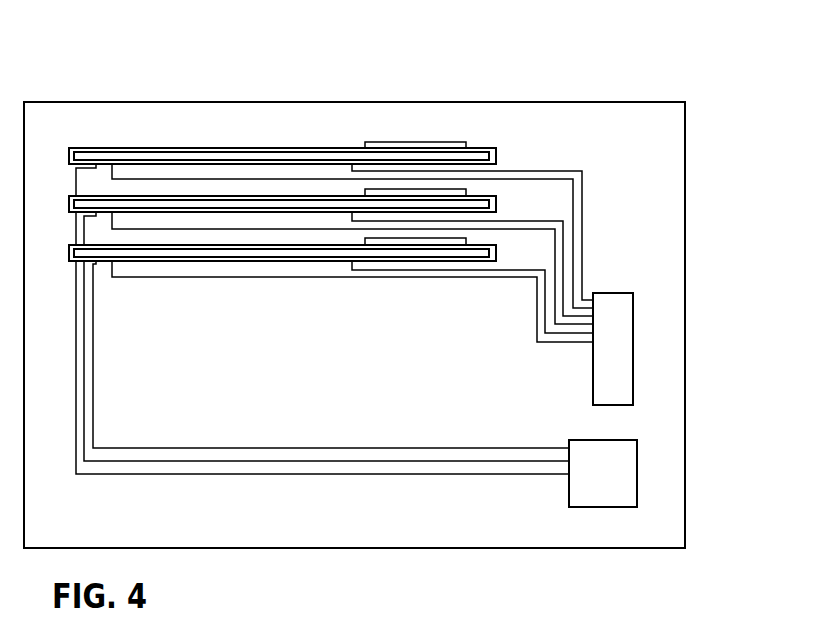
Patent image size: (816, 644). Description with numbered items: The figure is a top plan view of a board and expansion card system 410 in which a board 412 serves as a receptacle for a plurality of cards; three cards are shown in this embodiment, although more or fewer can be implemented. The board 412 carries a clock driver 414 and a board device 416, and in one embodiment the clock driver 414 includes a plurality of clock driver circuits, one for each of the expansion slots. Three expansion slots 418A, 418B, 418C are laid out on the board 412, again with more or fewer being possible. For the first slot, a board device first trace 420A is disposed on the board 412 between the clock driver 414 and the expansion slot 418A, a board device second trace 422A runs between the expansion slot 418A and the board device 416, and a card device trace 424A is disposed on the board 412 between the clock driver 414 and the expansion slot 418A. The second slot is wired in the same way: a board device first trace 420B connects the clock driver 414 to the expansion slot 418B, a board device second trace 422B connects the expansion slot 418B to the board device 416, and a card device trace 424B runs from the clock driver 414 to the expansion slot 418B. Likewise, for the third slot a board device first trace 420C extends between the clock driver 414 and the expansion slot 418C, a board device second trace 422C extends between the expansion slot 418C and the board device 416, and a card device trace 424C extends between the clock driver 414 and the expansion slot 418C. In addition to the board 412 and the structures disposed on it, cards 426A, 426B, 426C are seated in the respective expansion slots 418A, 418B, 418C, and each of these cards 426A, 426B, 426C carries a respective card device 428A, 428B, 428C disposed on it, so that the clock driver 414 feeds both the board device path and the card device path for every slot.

The system 410 is at (595, 92).
The board 412 is at (652, 120).
The clock driver 414 is at (613, 362).
The board device 416 is at (613, 480).
The expansion slot 418A is at (108, 247).
The expansion slot 418B is at (213, 198).
The expansion slot 418C is at (313, 150).
The board device first trace 420A is at (537, 335).
The board device first trace 420B is at (545, 307).
The board device first trace 420C is at (572, 248).
The board device second trace 422A is at (283, 448).
The board device second trace 422B is at (205, 461).
The board device second trace 422C is at (130, 474).
The card device trace 424A is at (540, 326).
The card device trace 424B is at (543, 289).
The card device trace 424C is at (582, 283).
The card 426A is at (155, 253).
The card 426B is at (253, 203).
The card 426C is at (350, 158).
The card device 428A is at (380, 242).
The card device 428B is at (410, 192).
The card device 428C is at (443, 145).